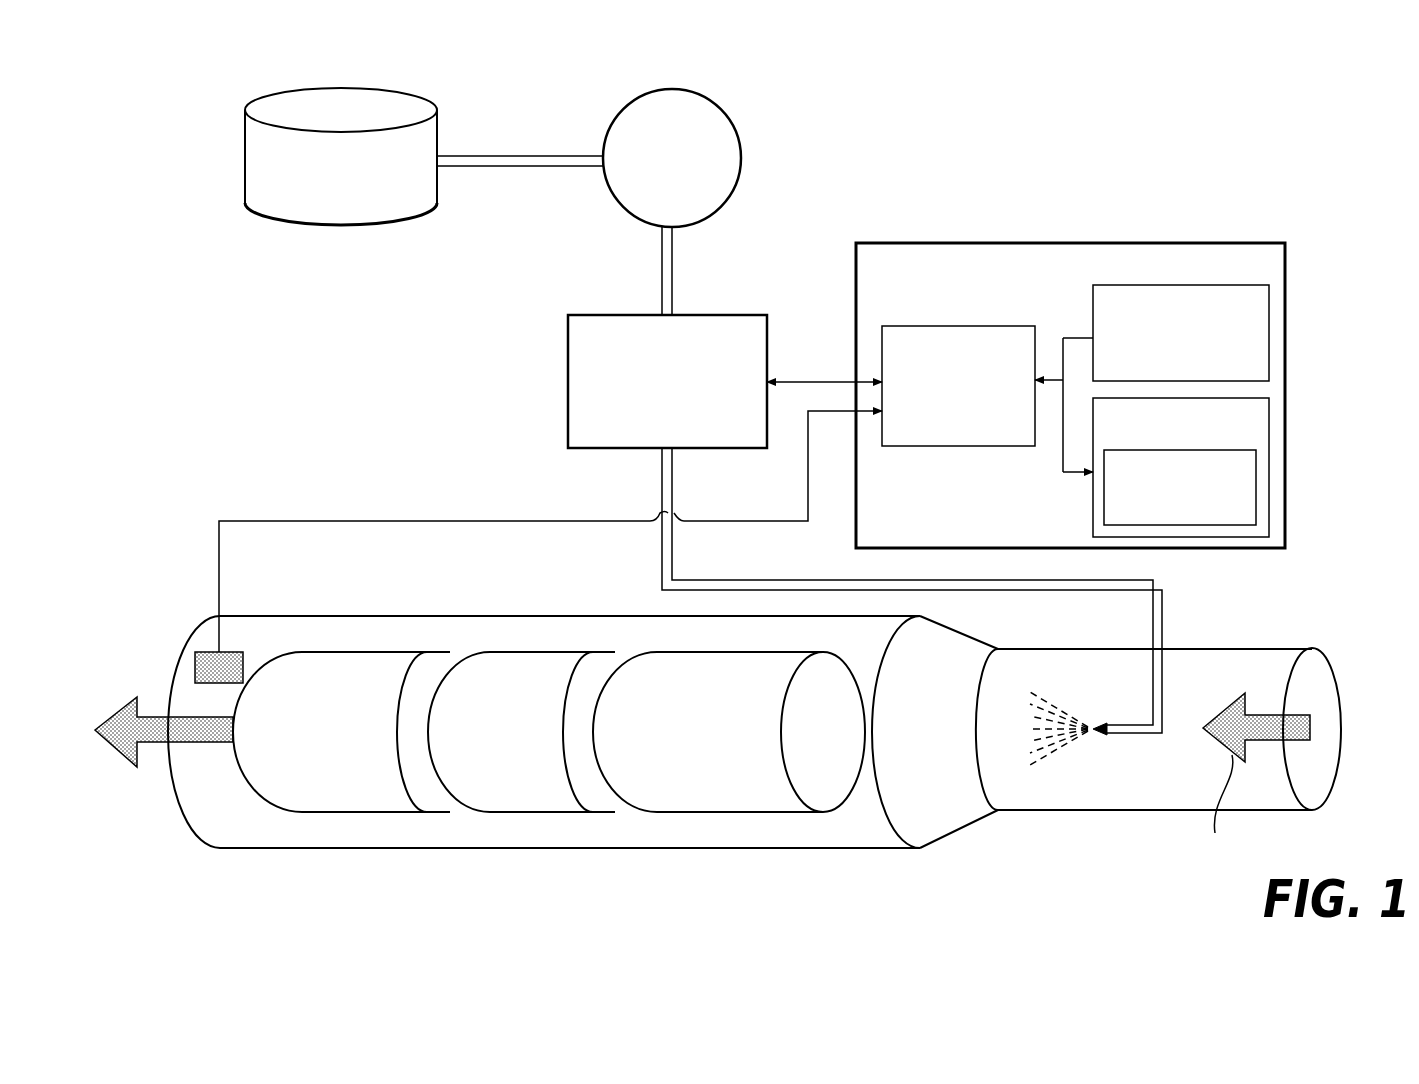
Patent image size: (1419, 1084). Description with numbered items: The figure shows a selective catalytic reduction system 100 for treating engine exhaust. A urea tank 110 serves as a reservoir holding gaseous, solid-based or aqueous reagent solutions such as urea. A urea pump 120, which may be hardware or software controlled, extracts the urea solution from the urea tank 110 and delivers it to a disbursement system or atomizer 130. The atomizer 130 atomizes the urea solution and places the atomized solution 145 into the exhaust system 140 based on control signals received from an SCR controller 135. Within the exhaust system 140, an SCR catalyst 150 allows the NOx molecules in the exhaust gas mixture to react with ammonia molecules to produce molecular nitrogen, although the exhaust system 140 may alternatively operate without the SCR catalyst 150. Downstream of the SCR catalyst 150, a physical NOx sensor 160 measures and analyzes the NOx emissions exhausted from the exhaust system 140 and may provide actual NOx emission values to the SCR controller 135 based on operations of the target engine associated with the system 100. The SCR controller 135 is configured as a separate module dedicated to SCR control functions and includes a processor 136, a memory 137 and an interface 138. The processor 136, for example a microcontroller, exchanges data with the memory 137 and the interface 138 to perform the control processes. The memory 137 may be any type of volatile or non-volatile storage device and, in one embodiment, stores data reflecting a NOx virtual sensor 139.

The system 100 is at (277, 440).
The urea tank 110 is at (358, 185).
The urea pump 120 is at (687, 175).
The atomizer 130 is at (682, 398).
The SCR controller 135 is at (983, 295).
The processor 136 is at (1198, 350).
The memory 137 is at (1198, 440).
The interface 138 is at (975, 397).
The NOx virtual sensor 139 is at (1198, 507).
The exhaust system 140 is at (960, 800).
The atomized solution 145 is at (1062, 753).
The SCR catalyst 150 is at (517, 744).
The NOx sensor 160 is at (195, 677).